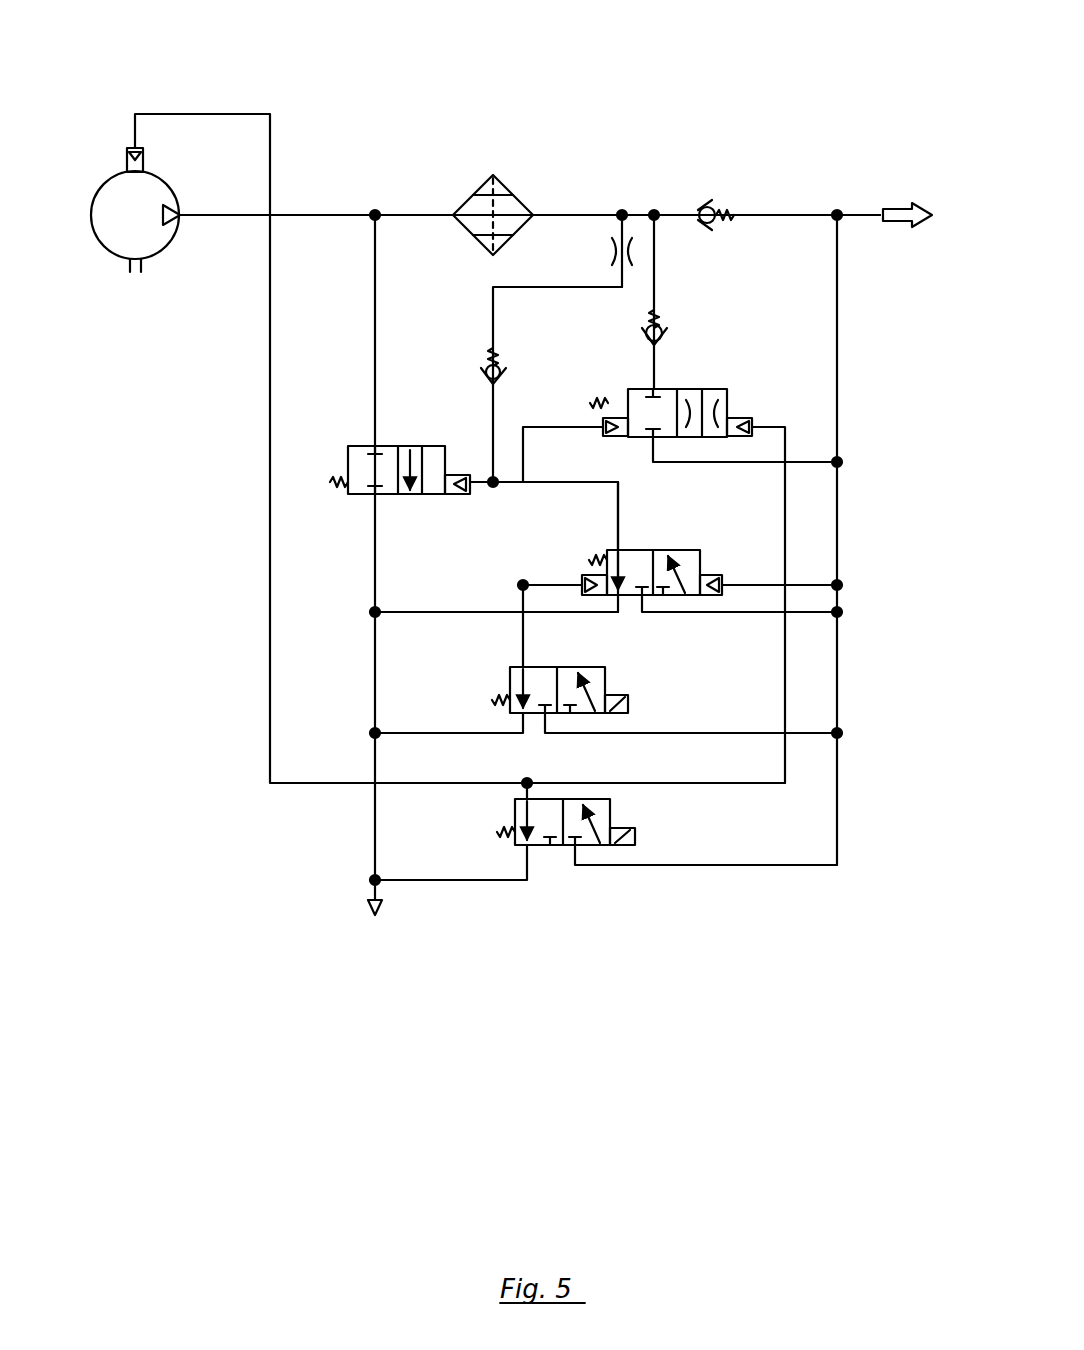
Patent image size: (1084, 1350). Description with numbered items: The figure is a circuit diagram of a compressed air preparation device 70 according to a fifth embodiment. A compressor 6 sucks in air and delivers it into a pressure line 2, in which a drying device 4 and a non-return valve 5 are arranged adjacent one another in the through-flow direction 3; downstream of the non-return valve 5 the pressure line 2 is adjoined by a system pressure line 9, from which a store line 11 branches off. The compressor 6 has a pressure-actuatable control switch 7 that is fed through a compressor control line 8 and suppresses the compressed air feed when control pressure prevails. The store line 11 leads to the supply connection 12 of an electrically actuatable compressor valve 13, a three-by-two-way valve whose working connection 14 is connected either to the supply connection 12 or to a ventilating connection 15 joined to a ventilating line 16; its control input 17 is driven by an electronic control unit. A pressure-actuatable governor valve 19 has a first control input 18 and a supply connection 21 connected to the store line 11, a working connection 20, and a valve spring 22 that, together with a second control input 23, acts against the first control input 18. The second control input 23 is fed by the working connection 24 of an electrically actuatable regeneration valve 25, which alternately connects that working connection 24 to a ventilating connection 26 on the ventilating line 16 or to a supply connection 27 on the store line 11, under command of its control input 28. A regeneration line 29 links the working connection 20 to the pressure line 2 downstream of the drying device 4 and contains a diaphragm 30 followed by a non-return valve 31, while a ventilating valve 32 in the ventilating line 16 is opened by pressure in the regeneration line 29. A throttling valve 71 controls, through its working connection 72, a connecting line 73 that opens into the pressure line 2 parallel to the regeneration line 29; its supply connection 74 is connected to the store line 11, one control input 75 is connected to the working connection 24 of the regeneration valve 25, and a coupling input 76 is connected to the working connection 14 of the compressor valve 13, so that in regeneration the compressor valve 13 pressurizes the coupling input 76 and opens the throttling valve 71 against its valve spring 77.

The pressure line 2 is at (318, 215).
The through-flow direction 3 is at (895, 215).
The drying device 4 is at (468, 193).
The non-return valve 5 is at (695, 213).
The compressor 6 is at (122, 208).
The control switch 7 is at (130, 147).
The compressor control line 8 is at (220, 114).
The system pressure line 9 is at (800, 215).
The store line 11 is at (840, 555).
The supply connection 12 is at (580, 852).
The compressor valve 13 is at (543, 825).
The working connection 14 is at (521, 792).
The ventilating connection 15 is at (521, 849).
The ventilating line 16 is at (372, 818).
The control input 17 is at (621, 843).
The first control input 18 is at (712, 577).
The governor valve 19 is at (672, 545).
The working connection 20 is at (620, 547).
The supply connection 21 is at (648, 600).
The valve spring 22 is at (591, 556).
The second control input 23 is at (598, 580).
The working connection 24 is at (520, 664).
The regeneration valve 25 is at (618, 667).
The ventilating connection 26 is at (519, 722).
The supply connection 27 is at (550, 719).
The control input 28 is at (628, 703).
The regeneration line 29 is at (490, 330).
The diaphragm 30 is at (604, 247).
The non-return valve 31 is at (487, 368).
The ventilating valve 32 is at (370, 467).
The compressed air preparation device 70 is at (231, 990).
The throttling valve 71 is at (684, 370).
The working connection 72 is at (640, 380).
The connecting line 73 is at (657, 283).
The supply connection 74 is at (659, 440).
The control input 75 is at (746, 418).
The coupling input 76 is at (602, 424).
The valve spring 77 is at (604, 389).